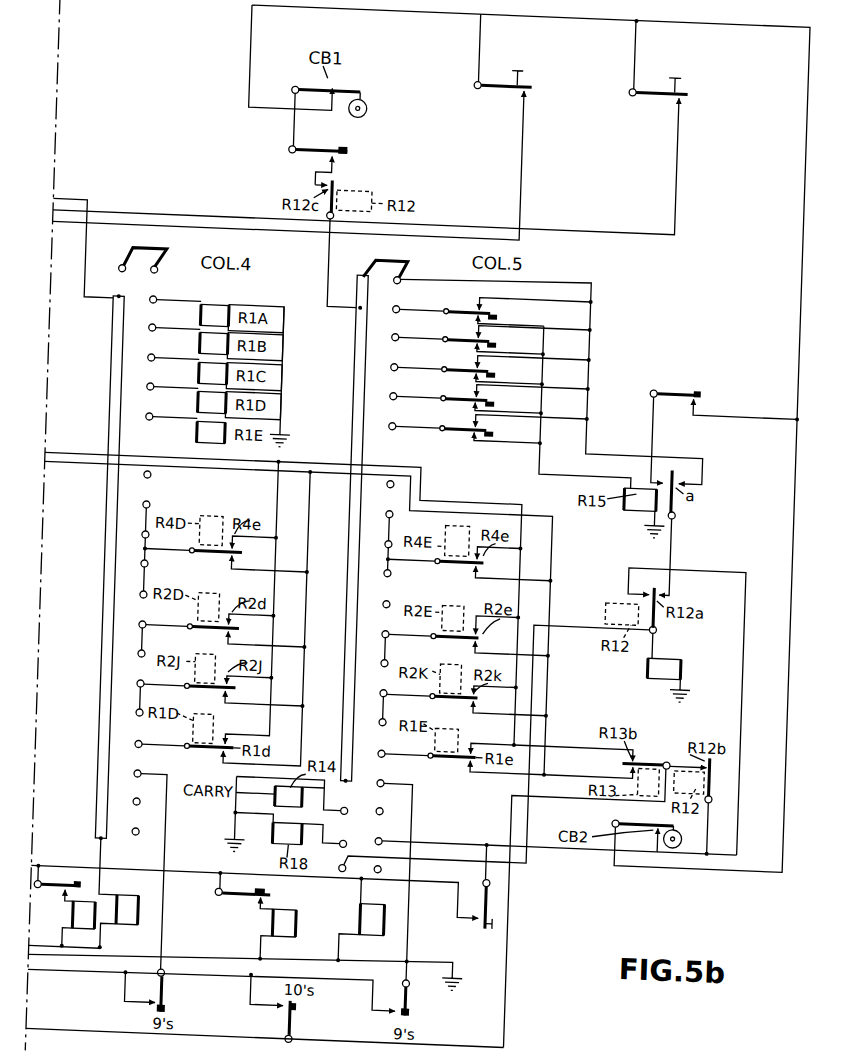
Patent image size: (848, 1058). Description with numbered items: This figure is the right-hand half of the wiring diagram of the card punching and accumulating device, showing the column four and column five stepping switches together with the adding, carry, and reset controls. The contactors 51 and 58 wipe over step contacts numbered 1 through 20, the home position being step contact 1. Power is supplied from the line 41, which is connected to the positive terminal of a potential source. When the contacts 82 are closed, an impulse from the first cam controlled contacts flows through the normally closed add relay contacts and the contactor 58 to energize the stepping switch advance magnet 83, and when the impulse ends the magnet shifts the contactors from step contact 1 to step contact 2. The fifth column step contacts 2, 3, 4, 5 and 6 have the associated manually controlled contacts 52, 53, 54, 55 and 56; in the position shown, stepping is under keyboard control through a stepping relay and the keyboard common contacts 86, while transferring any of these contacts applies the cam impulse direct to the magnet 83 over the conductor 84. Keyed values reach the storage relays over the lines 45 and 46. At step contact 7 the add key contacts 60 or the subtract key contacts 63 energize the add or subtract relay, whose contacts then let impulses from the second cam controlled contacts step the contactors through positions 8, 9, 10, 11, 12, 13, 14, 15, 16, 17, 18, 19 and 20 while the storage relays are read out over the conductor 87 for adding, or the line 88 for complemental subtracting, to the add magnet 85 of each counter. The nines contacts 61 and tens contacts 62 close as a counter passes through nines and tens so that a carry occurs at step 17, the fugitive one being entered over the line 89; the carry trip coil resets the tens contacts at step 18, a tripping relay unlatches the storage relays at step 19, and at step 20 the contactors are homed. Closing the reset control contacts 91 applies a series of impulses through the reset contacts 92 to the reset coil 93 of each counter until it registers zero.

The step contact position No. 1 is at (137, 267).
The step contact position No. 2 is at (145, 299).
The step contact position No. 3 is at (144, 327).
The step contact position No. 4 is at (143, 357).
The step contact position No. 5 is at (142, 386).
The step contact position No. 6 is at (141, 416).
The step contact position No. 7 is at (139, 474).
The step contact position No. 8 is at (138, 504).
The step contact position No. 9 is at (137, 534).
The step contact position No. 10 is at (132, 562).
The step contact position No. 11 is at (130, 593).
The step contact position No. 12 is at (129, 623).
The step contact position No. 13 is at (129, 652).
The step contact position No. 14 is at (128, 682).
The step contact position No. 15 is at (127, 711).
The step contact position No. 16 is at (126, 742).
The step contact position No. 17 is at (246, 777).
The step contact position No. 18 is at (245, 805).
The step contact position No. 19 is at (244, 835).
The step contact position No. 20 is at (349, 869).
The line 41 is at (429, 6).
The line 45 is at (443, 212).
The line 46 is at (217, 229).
The contactor 51 is at (137, 250).
The contacts 52 is at (497, 294).
The contacts 53 is at (488, 330).
The contacts 54 is at (489, 360).
The contacts 55 is at (489, 389).
The contacts 56 is at (489, 418).
The contactor 58 is at (385, 255).
The add key contacts 60 is at (530, 81).
The nines contacts 61 is at (197, 1003).
The tens contacts 62 is at (272, 1008).
The subtract key contacts 63 is at (689, 81).
The contacts 82 is at (352, 144).
The stepping switch advance magnet 83 is at (692, 655).
The conductor 84 is at (600, 398).
The add magnet 85 is at (159, 925).
The keyboard common contacts 86 is at (713, 386).
The conductor 87 is at (319, 459).
The line 88 is at (571, 551).
The line 89 is at (538, 970).
The reset control contacts 91 is at (513, 915).
The reset contacts 92 is at (285, 908).
The reset coil 93 is at (115, 935).